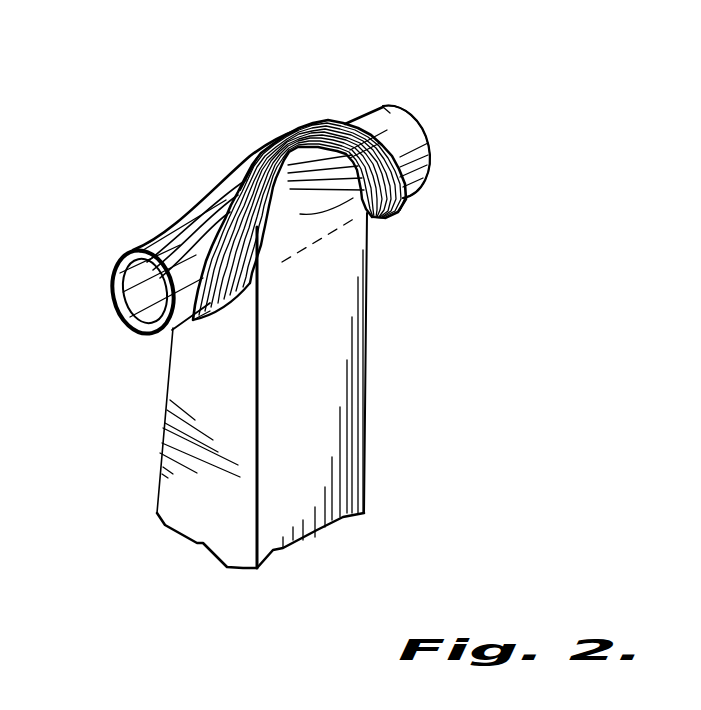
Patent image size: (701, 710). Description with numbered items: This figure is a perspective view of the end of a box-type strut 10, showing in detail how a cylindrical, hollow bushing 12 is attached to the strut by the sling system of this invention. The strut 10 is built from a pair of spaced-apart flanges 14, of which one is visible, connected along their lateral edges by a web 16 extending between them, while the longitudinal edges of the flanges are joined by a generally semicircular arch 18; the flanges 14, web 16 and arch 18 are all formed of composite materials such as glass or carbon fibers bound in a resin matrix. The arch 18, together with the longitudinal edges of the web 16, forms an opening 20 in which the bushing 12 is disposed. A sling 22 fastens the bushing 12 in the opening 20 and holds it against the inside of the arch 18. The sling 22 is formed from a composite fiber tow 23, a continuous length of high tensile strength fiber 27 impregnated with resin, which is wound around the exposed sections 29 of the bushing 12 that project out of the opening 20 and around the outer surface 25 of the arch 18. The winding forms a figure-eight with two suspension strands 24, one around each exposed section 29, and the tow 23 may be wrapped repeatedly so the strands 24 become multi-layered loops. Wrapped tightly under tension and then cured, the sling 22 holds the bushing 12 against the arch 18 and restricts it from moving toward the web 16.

The box-type strut 10 is at (423, 362).
The bushing 12 is at (415, 112).
The flange 14 is at (320, 432).
The web 16 is at (187, 447).
The arch 18 is at (429, 139).
The opening 20 is at (215, 215).
The sling 22 is at (279, 134).
The composite fiber tow 23 is at (238, 167).
The suspension strand 24 is at (207, 320).
The outer surface 25 is at (343, 125).
The fiber 27 is at (380, 218).
The exposed section 29 is at (150, 250).